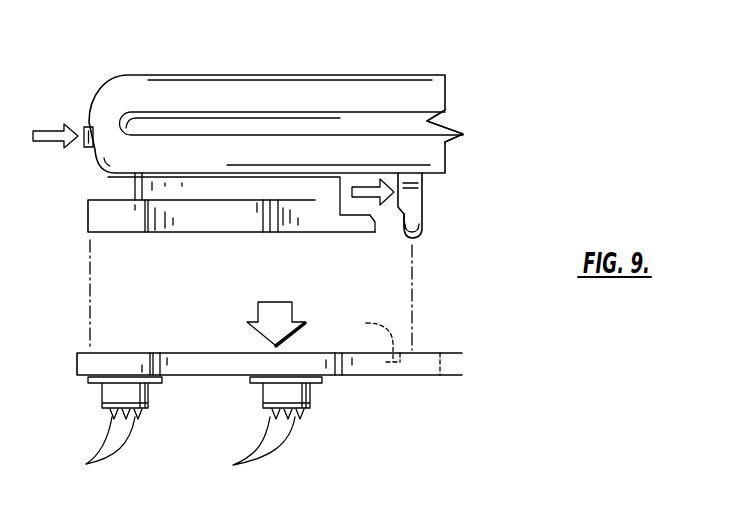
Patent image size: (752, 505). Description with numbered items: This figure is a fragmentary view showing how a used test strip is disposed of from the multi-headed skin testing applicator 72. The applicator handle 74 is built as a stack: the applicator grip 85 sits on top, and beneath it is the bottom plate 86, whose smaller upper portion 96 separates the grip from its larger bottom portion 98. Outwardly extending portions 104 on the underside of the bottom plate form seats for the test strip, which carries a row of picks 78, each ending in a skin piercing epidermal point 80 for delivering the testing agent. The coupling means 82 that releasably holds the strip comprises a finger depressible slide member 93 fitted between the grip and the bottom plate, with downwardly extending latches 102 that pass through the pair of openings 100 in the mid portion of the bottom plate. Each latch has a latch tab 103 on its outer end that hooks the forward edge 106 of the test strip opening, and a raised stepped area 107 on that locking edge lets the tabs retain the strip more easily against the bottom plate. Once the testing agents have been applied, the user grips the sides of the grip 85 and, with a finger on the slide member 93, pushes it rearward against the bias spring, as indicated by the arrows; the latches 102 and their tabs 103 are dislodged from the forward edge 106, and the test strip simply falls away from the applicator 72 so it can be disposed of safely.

The applicator 72 is at (378, 58).
The applicator handle 74 is at (447, 142).
The picks 78 is at (313, 393).
The skin piercing epidermal point 80 is at (176, 449).
The coupling means 82 is at (412, 197).
The applicator grip 85 is at (268, 90).
The bottom plate 86 is at (195, 200).
The slide member 93 is at (85, 128).
The upper portion of bottom plate 96 is at (140, 190).
The bottom portion of bottom plate 98 is at (108, 222).
The openings 100 is at (392, 222).
The latches 102 is at (423, 213).
The latch tab 103 is at (420, 223).
The outwardly extending portions 104 is at (108, 233).
The forward edge of test strip opening 106 is at (393, 368).
The raised stepped area 107 is at (367, 335).